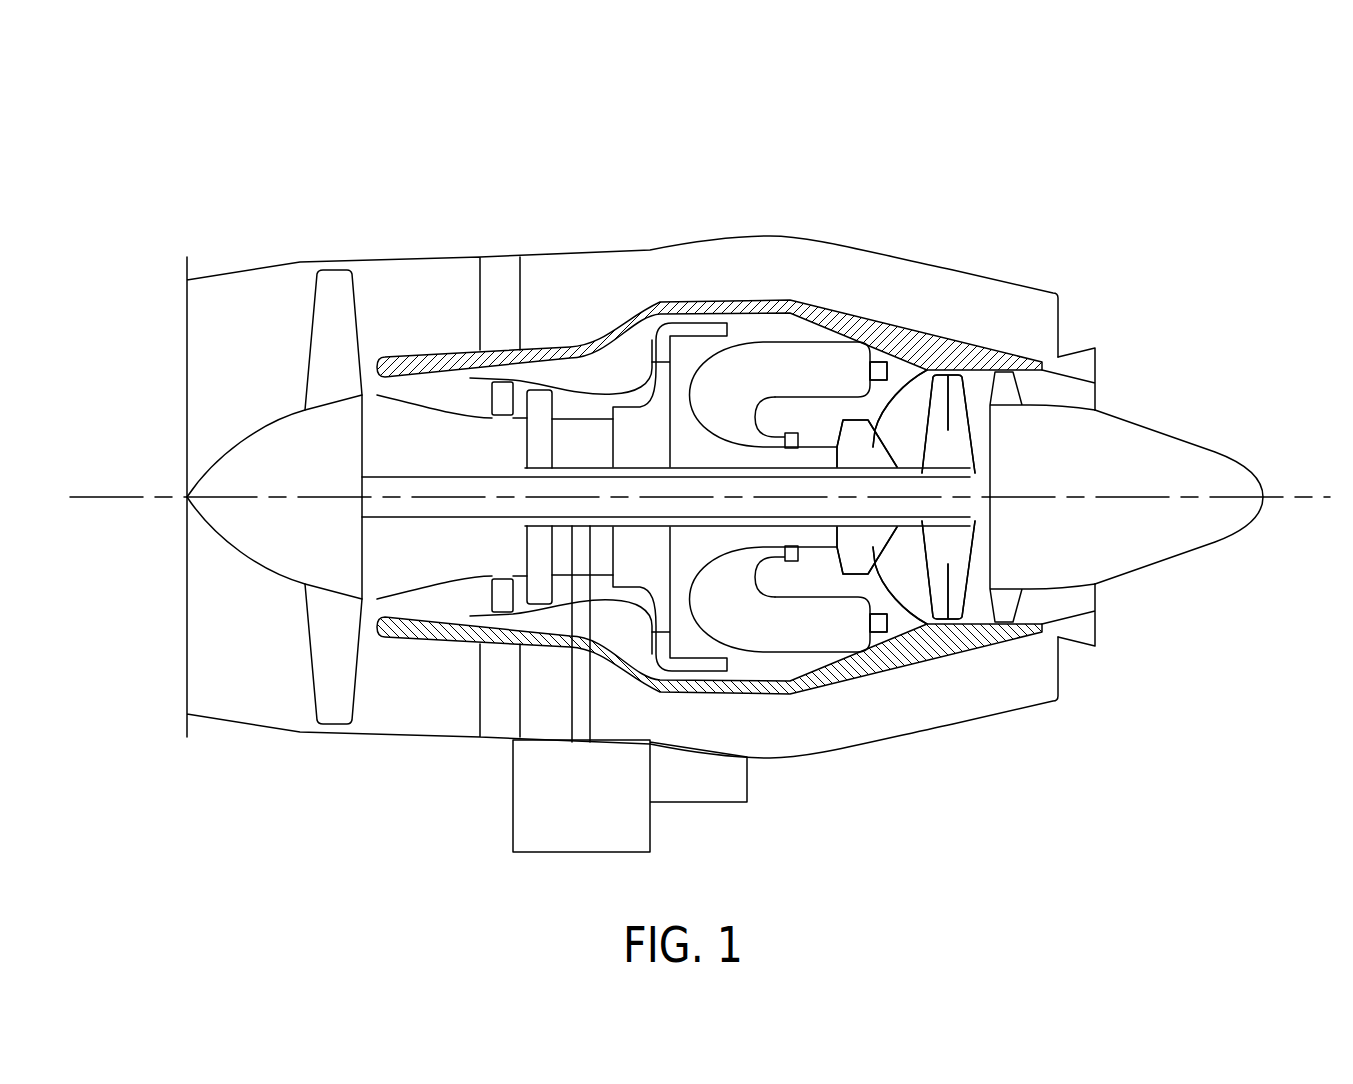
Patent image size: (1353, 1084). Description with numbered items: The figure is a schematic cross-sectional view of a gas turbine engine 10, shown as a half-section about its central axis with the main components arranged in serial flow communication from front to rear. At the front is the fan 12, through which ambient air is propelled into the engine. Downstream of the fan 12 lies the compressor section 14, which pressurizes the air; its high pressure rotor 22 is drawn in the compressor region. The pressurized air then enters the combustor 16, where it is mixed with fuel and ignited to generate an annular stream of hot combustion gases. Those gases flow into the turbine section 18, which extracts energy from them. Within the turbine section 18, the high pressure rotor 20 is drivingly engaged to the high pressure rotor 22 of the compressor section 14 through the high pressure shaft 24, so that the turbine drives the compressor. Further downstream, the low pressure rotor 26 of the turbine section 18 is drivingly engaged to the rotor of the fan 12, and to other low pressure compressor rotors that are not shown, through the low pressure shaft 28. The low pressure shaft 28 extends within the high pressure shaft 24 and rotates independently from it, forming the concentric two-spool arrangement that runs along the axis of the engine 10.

The gas turbine engine 10 is at (927, 176).
The fan 12 is at (330, 643).
The compressor section 14 is at (568, 395).
The combustor 16 is at (778, 360).
The turbine section 18 is at (905, 565).
The high pressure rotor 20 is at (873, 430).
The high pressure rotor 22 is at (641, 423).
The high pressure shaft 24 is at (780, 435).
The low pressure rotor 26 is at (932, 380).
The low pressure shaft 28 is at (422, 520).